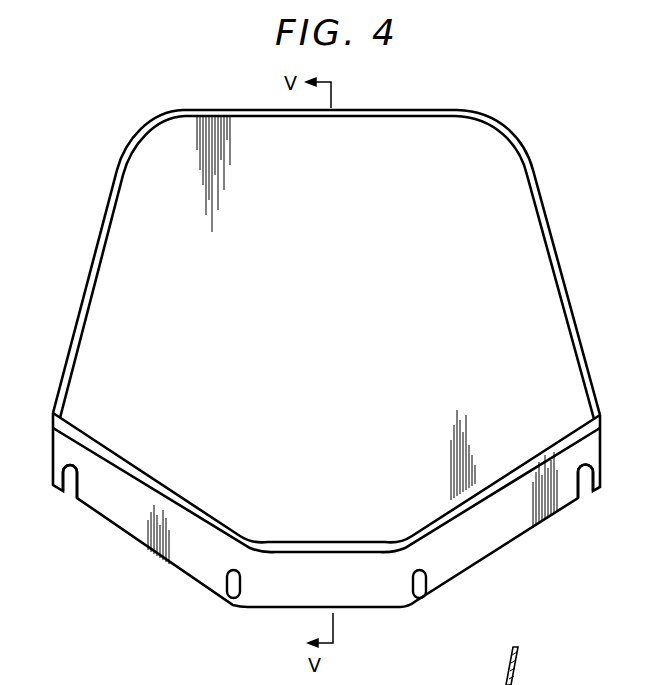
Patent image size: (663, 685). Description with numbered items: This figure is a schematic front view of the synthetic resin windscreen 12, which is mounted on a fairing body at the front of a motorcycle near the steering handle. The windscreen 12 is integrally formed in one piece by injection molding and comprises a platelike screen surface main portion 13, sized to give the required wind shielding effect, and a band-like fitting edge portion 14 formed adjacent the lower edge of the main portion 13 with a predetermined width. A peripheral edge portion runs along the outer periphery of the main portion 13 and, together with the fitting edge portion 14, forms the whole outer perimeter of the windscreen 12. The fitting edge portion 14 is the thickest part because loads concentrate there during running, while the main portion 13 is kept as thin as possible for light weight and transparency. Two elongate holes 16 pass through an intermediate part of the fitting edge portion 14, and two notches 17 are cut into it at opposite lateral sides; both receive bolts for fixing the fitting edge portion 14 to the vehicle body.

The synthetic resin windscreen 12 is at (565, 247).
The screen surface main portion 13 is at (388, 324).
The fitting edge portion 14 is at (280, 597).
The elongate holes 16 is at (228, 596).
The notches 17 is at (69, 493).